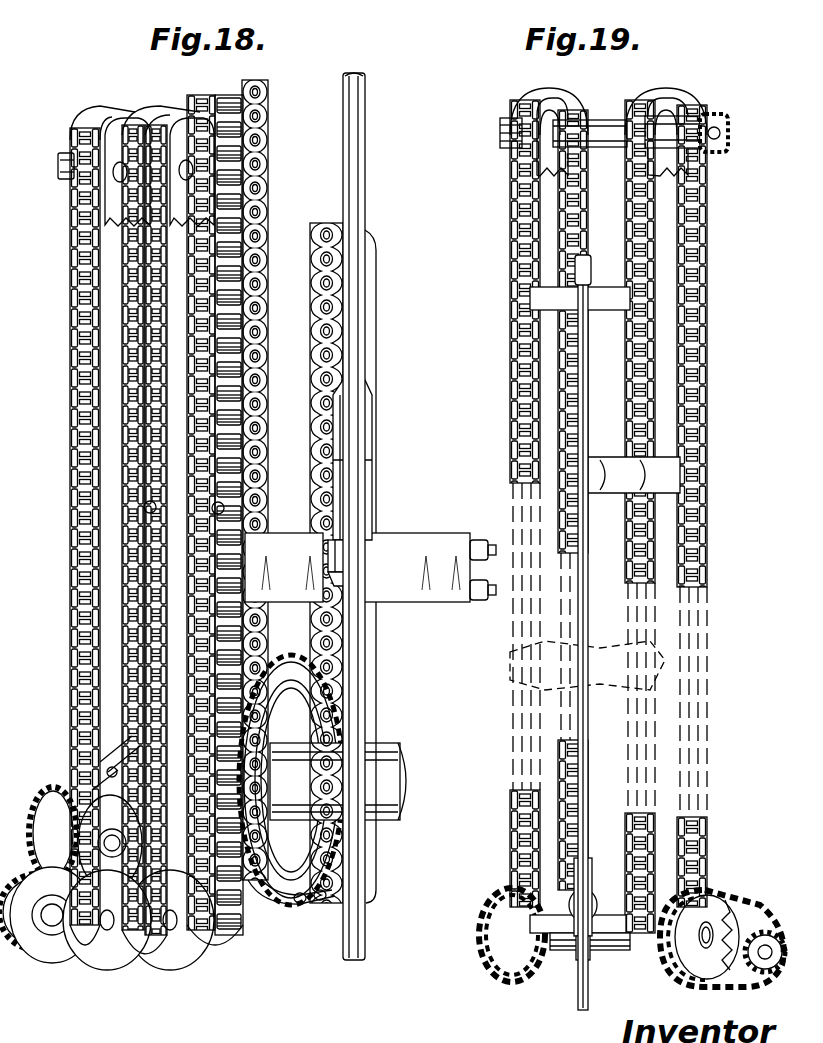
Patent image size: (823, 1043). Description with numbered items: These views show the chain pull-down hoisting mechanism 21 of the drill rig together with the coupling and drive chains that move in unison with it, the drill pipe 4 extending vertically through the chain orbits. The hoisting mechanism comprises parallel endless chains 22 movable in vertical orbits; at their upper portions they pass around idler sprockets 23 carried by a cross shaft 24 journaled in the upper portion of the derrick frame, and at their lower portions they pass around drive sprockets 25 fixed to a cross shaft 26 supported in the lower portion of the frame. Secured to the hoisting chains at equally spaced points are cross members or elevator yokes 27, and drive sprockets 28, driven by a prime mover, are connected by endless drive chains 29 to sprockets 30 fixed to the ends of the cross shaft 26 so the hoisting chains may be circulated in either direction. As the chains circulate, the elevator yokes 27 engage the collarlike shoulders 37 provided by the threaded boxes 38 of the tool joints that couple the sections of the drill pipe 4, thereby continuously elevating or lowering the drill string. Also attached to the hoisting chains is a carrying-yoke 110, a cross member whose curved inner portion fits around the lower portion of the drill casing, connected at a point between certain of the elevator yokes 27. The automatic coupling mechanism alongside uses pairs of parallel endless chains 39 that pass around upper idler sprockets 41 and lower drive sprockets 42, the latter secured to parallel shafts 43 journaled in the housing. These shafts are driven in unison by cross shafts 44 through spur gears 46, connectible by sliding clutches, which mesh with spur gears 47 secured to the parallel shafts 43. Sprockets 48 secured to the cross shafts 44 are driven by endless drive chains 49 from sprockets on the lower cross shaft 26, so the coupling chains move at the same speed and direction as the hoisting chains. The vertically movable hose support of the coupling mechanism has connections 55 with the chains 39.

In FIG. 18, the drive shaft 4 is at (366, 228).
In FIG. 19, the drive shaft 4 is at (589, 622).
In FIG. 18, the hoisting mechanism 21 is at (378, 348).
In FIG. 19, the hoisting mechanism 21 is at (708, 322).
In FIG. 18, the endless chains 22 is at (262, 292).
In FIG. 19, the endless chains 22 is at (512, 404).
In FIG. 19, the idler sprockets 23 is at (540, 160).
In FIG. 19, the cross shaft 24 is at (590, 124).
In FIG. 18, the drive sprockets 25 is at (288, 658).
In FIG. 19, the drive sprockets 25 is at (584, 904).
In FIG. 18, the cross shaft 26 is at (384, 748).
In FIG. 19, the cross shaft 26 is at (618, 952).
In FIG. 18, the elevator yokes 27 is at (416, 535).
In FIG. 19, the elevator yokes 27 is at (600, 310).
In FIG. 19, the drive sprockets 28 is at (764, 935).
In FIG. 19, the endless drive chains 29 is at (496, 964).
In FIG. 19, the sprockets 30 is at (706, 958).
In FIG. 18, the shoulders 37 is at (370, 540).
In FIG. 19, the shoulders 37 is at (572, 940).
In FIG. 18, the threaded boxes 38 is at (366, 488).
In FIG. 19, the threaded boxes 38 is at (588, 932).
In FIG. 18, the endless chains 39 is at (152, 438).
In FIG. 18, the upper idler sprockets 41 is at (182, 146).
In FIG. 18, the lower drive sprockets 42 is at (150, 945).
In FIG. 18, the parallel shafts 43 is at (60, 925).
In FIG. 18, the cross shafts 44 is at (110, 845).
In FIG. 18, the spur gears 46 is at (62, 805).
In FIG. 18, the spur gears 47 is at (28, 950).
In FIG. 18, the sprockets 48 is at (118, 758).
In FIG. 18, the endless drive chains 49 is at (110, 778).
In FIG. 18, the connections 55 is at (215, 510).
In FIG. 19, the carrying-yoke 110 is at (530, 690).